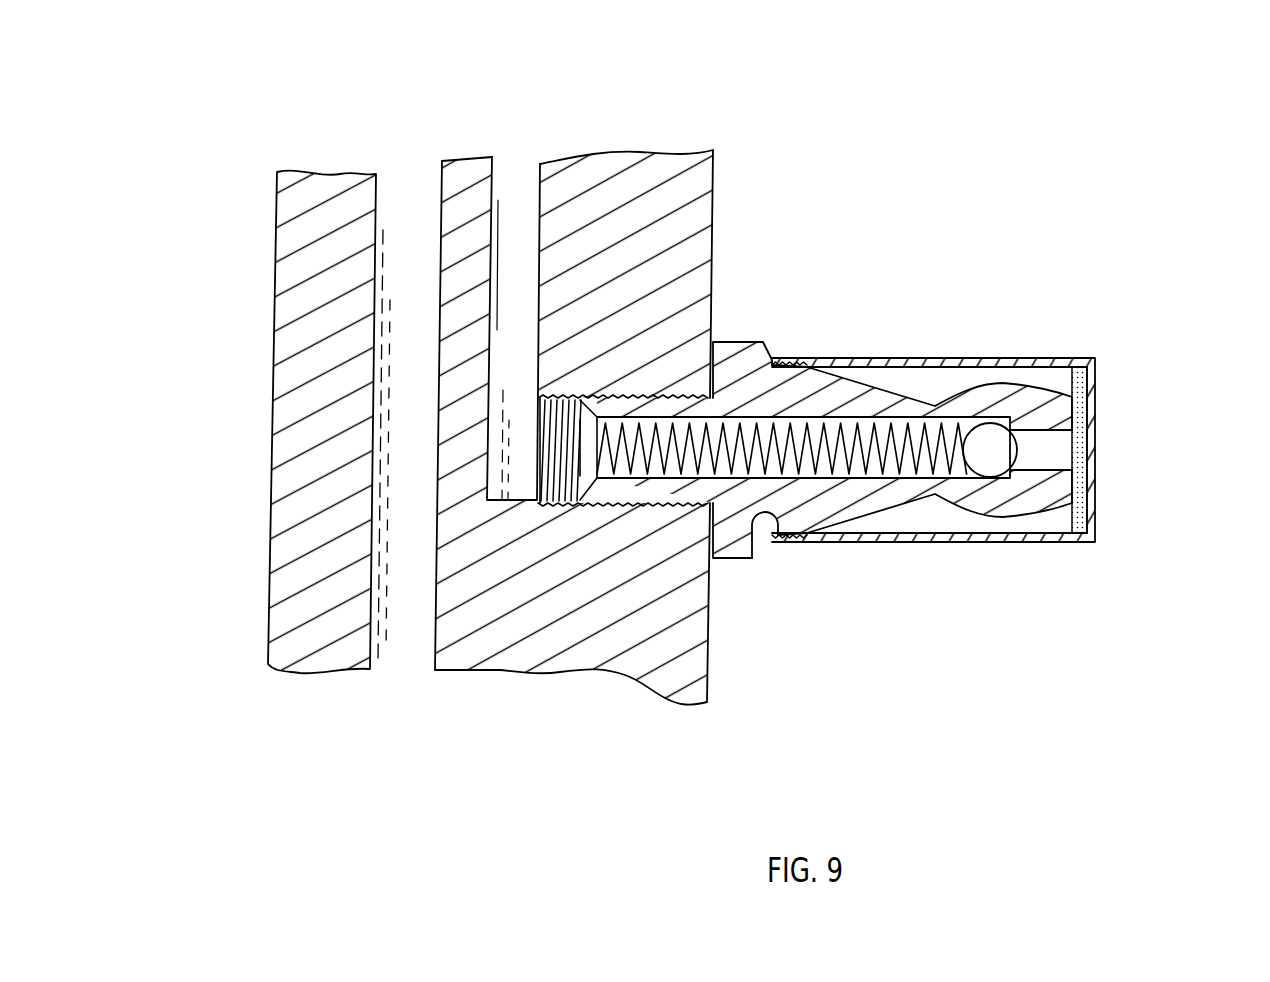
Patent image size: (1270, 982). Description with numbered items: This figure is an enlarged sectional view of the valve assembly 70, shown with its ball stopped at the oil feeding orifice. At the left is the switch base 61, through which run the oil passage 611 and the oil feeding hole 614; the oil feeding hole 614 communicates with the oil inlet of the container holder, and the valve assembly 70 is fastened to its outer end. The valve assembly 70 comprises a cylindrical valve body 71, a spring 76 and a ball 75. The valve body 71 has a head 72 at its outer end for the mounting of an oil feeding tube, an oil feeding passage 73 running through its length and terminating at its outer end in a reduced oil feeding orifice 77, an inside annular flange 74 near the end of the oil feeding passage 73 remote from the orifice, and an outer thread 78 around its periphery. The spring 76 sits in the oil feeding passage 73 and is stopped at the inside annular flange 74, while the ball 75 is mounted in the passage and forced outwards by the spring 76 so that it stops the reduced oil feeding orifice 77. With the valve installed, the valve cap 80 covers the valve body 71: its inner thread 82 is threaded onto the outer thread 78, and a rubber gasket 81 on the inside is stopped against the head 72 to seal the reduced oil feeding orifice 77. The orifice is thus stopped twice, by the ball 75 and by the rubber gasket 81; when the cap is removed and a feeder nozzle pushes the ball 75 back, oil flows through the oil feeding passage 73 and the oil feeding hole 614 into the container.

The switch base 61 is at (297, 443).
The oil passage 611 is at (415, 211).
The oil feeding hole 614 is at (518, 198).
The valve assembly 70 is at (817, 303).
The valve body 71 is at (858, 405).
The head 72 is at (1047, 367).
The oil feeding passage 73 is at (888, 470).
The inside annular flange 74 is at (583, 496).
The ball 75 is at (990, 462).
The spring 76 is at (930, 424).
The reduced oil feeding orifice 77 is at (1060, 453).
The outer thread 78 is at (755, 517).
The valve cap 80 is at (1097, 520).
The rubber gasket 81 is at (1100, 397).
The inner thread 82 is at (786, 538).